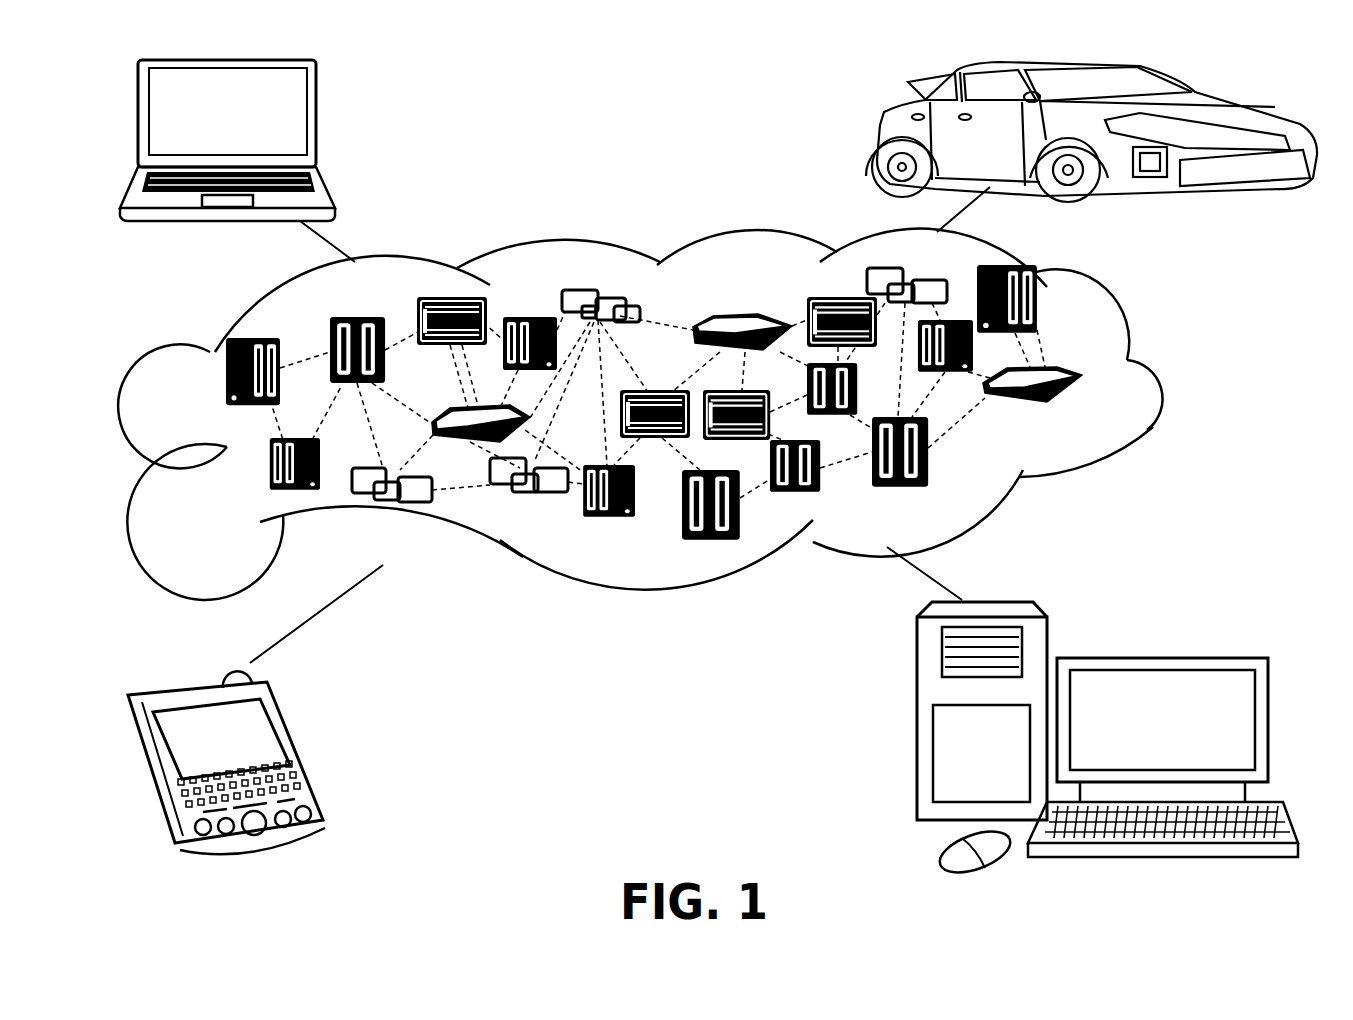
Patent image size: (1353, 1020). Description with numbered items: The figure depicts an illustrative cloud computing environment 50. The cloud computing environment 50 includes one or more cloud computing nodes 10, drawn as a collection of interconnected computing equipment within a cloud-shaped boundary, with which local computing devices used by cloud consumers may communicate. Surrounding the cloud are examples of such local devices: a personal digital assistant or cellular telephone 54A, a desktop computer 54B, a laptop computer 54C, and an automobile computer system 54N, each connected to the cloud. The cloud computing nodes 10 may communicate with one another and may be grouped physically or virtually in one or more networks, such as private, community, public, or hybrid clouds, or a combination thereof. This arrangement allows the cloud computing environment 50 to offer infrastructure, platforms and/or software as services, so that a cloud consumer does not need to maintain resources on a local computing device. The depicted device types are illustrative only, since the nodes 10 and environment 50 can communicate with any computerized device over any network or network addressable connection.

The cloud computing node 10 is at (1090, 410).
The cloud computing environment 50 is at (677, 414).
The personal digital assistant or cellular telephone 54A is at (302, 751).
The desktop computer 54B is at (1158, 658).
The laptop computer 54C is at (317, 121).
The automobile computer system 54N is at (877, 138).